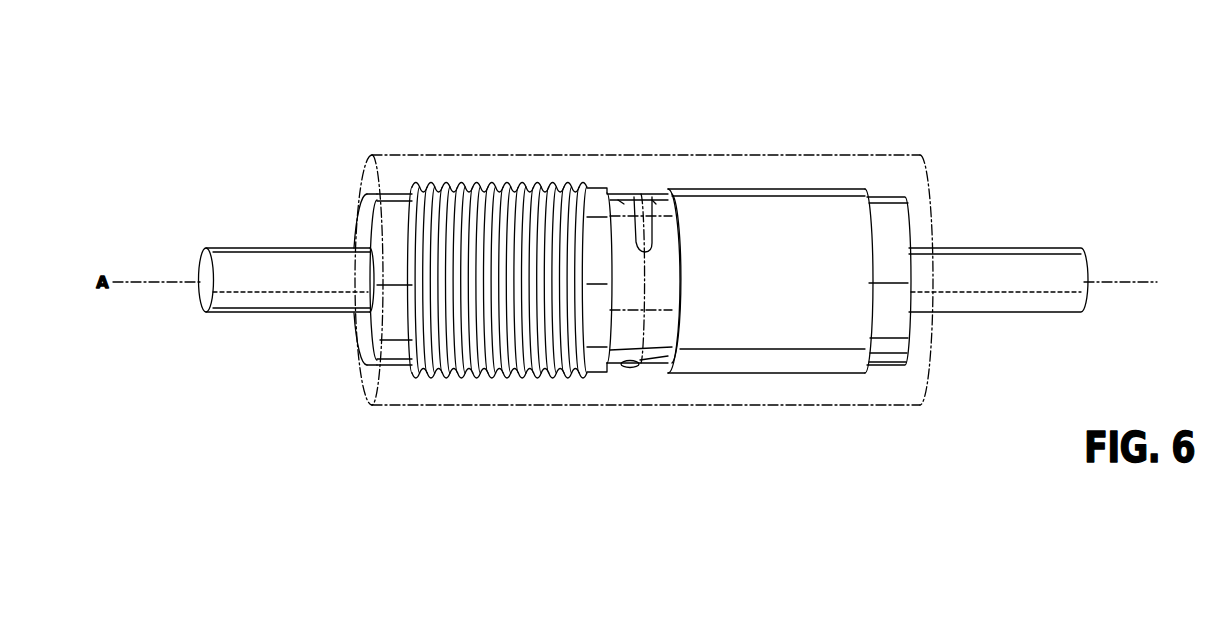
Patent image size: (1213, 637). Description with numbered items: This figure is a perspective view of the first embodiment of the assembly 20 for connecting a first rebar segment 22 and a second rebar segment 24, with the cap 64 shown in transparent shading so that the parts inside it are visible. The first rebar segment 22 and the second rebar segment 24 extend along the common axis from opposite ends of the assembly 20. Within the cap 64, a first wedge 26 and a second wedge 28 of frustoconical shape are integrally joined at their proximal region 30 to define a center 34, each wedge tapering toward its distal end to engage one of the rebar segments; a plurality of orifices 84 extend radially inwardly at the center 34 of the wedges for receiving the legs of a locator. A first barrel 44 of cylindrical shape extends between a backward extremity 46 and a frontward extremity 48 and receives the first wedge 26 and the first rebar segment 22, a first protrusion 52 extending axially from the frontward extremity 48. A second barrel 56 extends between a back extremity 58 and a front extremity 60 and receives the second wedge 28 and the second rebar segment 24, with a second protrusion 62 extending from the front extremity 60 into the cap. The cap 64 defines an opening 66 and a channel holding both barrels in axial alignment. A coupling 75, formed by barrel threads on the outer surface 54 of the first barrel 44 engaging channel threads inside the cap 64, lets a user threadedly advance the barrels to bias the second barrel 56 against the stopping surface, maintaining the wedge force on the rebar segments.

The assembly 20 is at (876, 115).
The first rebar segment 22 is at (233, 262).
The second rebar segment 24 is at (968, 264).
The first wedge 26 is at (610, 372).
The second wedge 28 is at (645, 375).
The proximal region 30 is at (621, 199).
The center 34 is at (640, 196).
The first barrel 44 is at (448, 286).
The backward extremity 46 is at (404, 192).
The frontward extremity 48 is at (630, 279).
The first protrusion 52 is at (359, 325).
The outer surface 54 is at (500, 375).
The second barrel 56 is at (767, 295).
The back extremity 58 is at (662, 193).
The front extremity 60 is at (932, 258).
The second protrusion 62 is at (897, 346).
The cap 64 is at (886, 409).
The opening 66 is at (368, 370).
The coupling 75 is at (497, 271).
The orifices 84 is at (628, 367).